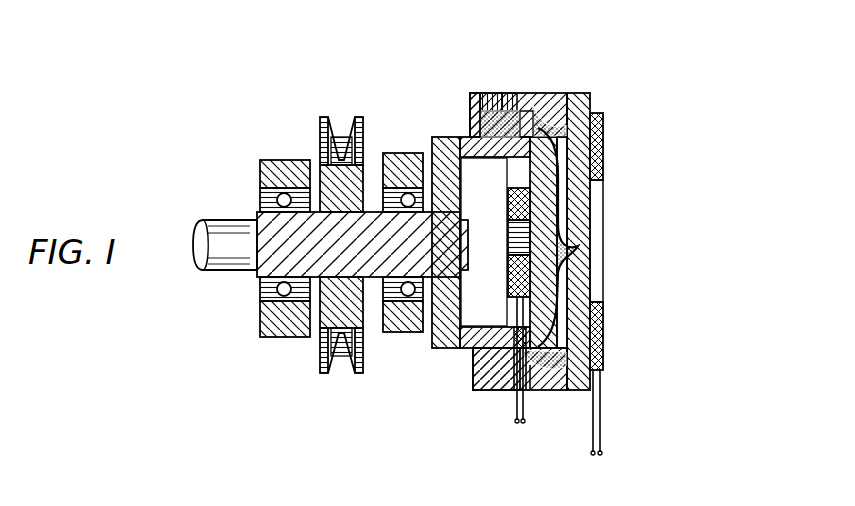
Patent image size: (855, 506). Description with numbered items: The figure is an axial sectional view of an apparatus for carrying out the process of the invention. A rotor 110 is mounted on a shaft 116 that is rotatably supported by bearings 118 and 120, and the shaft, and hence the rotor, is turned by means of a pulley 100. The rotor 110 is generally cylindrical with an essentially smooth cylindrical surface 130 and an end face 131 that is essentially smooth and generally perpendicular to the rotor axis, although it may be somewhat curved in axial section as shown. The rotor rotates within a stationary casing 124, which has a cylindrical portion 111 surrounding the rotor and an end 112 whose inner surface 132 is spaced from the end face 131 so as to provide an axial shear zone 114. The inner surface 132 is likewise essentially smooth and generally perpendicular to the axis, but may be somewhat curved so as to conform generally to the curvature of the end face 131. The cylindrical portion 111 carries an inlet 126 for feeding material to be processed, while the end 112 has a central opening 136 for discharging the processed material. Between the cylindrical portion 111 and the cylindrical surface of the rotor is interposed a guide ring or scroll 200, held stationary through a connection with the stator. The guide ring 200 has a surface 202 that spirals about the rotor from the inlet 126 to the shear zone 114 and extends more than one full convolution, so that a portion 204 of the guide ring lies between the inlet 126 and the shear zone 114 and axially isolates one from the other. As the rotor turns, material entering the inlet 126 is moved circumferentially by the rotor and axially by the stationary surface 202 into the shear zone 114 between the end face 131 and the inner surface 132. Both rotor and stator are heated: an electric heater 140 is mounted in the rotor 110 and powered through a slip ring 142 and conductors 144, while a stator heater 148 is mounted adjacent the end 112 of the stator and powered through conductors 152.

The pulley 100 is at (366, 128).
The rotor 110 is at (440, 349).
The cylindrical portion 111 is at (470, 386).
The end 112 is at (583, 218).
The axial shear zone 114 is at (573, 196).
The shaft 116 is at (374, 210).
The bearing 118 is at (268, 196).
The bearing 120 is at (330, 244).
The stationary casing 124 is at (532, 378).
The inlet 126 is at (492, 92).
The cylindrical surface 130 is at (512, 122).
The end face 131 is at (562, 300).
The inner surface 132 is at (514, 120).
The central opening 136 is at (590, 257).
The electric heater 140 is at (510, 205).
The slip ring 142 is at (517, 348).
The conductors 144 is at (516, 408).
The stator heater 148 is at (603, 160).
The conductors 152 is at (601, 420).
The guide ring 200 is at (473, 127).
The spiral surface 202 is at (490, 115).
The portion 204 is at (540, 122).